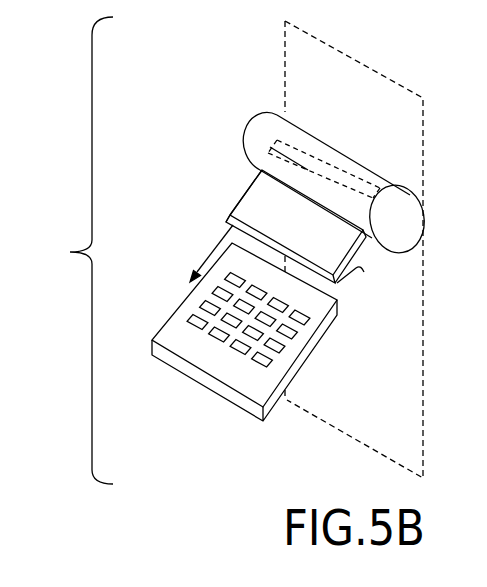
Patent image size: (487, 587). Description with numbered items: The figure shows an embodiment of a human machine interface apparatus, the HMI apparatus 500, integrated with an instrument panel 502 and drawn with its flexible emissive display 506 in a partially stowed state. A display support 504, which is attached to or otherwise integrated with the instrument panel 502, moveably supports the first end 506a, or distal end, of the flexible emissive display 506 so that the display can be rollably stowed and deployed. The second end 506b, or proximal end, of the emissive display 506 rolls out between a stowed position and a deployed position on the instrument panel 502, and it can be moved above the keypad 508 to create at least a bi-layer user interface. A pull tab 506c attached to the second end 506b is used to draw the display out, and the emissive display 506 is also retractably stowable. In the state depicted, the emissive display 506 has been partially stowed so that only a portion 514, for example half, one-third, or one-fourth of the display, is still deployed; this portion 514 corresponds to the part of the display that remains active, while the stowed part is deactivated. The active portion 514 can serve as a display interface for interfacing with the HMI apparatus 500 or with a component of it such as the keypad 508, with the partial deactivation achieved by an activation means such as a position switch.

The HMI apparatus 500 is at (70, 250).
The instrument panel 502 is at (348, 58).
The display support 504 is at (400, 222).
The flexible emissive display 506 is at (239, 200).
The first end 506a is at (263, 136).
The second end 506b is at (230, 217).
The pull tab 506c is at (228, 228).
The keypad 508 is at (208, 380).
The portion 514 is at (370, 269).